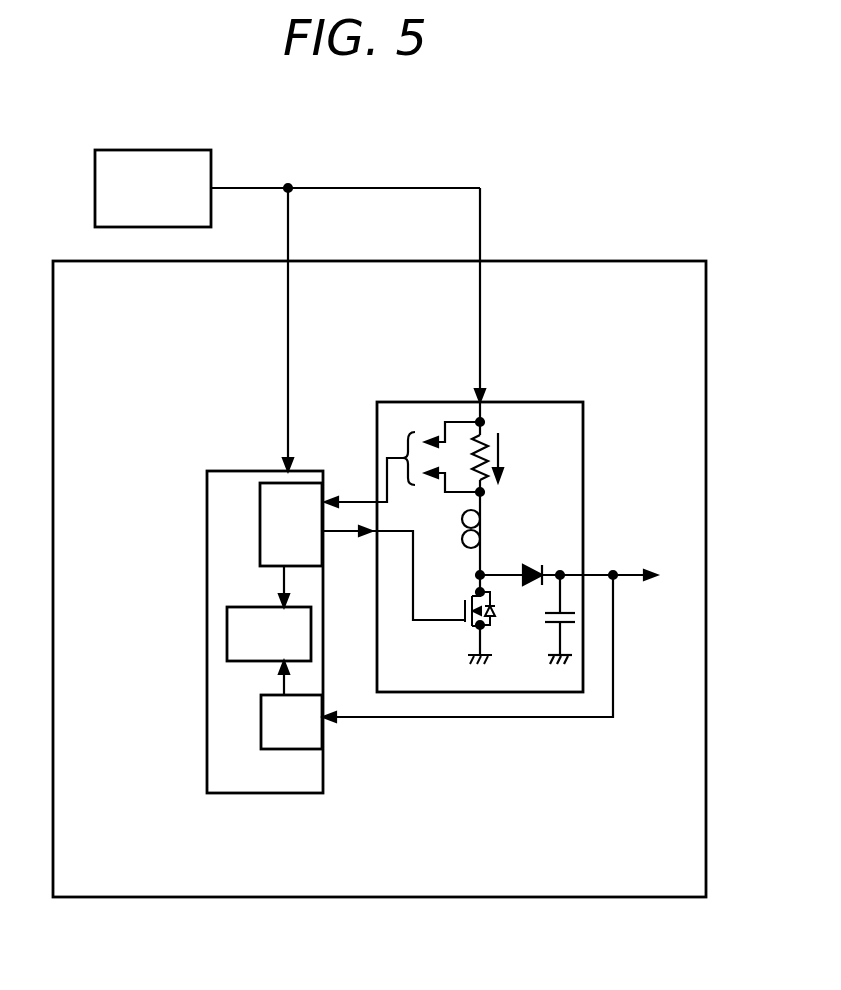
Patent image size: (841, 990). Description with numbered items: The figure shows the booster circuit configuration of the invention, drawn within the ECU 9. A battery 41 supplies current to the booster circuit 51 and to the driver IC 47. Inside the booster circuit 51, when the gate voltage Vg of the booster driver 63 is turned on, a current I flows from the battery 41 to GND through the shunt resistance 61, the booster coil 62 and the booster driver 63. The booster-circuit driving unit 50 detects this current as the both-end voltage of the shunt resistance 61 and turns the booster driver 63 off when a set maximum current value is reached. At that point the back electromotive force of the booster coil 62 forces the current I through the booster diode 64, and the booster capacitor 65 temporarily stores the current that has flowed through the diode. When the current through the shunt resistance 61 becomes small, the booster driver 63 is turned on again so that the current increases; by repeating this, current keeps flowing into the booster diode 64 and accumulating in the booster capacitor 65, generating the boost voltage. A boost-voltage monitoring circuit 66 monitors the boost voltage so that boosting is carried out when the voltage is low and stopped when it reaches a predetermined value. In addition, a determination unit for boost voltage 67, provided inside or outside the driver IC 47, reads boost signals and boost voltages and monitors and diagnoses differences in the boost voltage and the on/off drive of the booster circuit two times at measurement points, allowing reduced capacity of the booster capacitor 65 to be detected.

The ECU (Engine Control Unit) 9 is at (118, 890).
The battery 41 is at (155, 158).
The driver IC 47 is at (233, 782).
The booster-circuit driving unit 50 is at (267, 547).
The booster circuit 51 is at (548, 422).
The shunt resistance 61 is at (493, 462).
The booster coil 62 is at (495, 527).
The booster driver 63 is at (460, 630).
The booster diode 64 is at (537, 558).
The booster capacitor 65 is at (550, 630).
The boost-voltage monitoring circuit 66 is at (261, 717).
The determination unit for boost voltage 67 is at (227, 661).